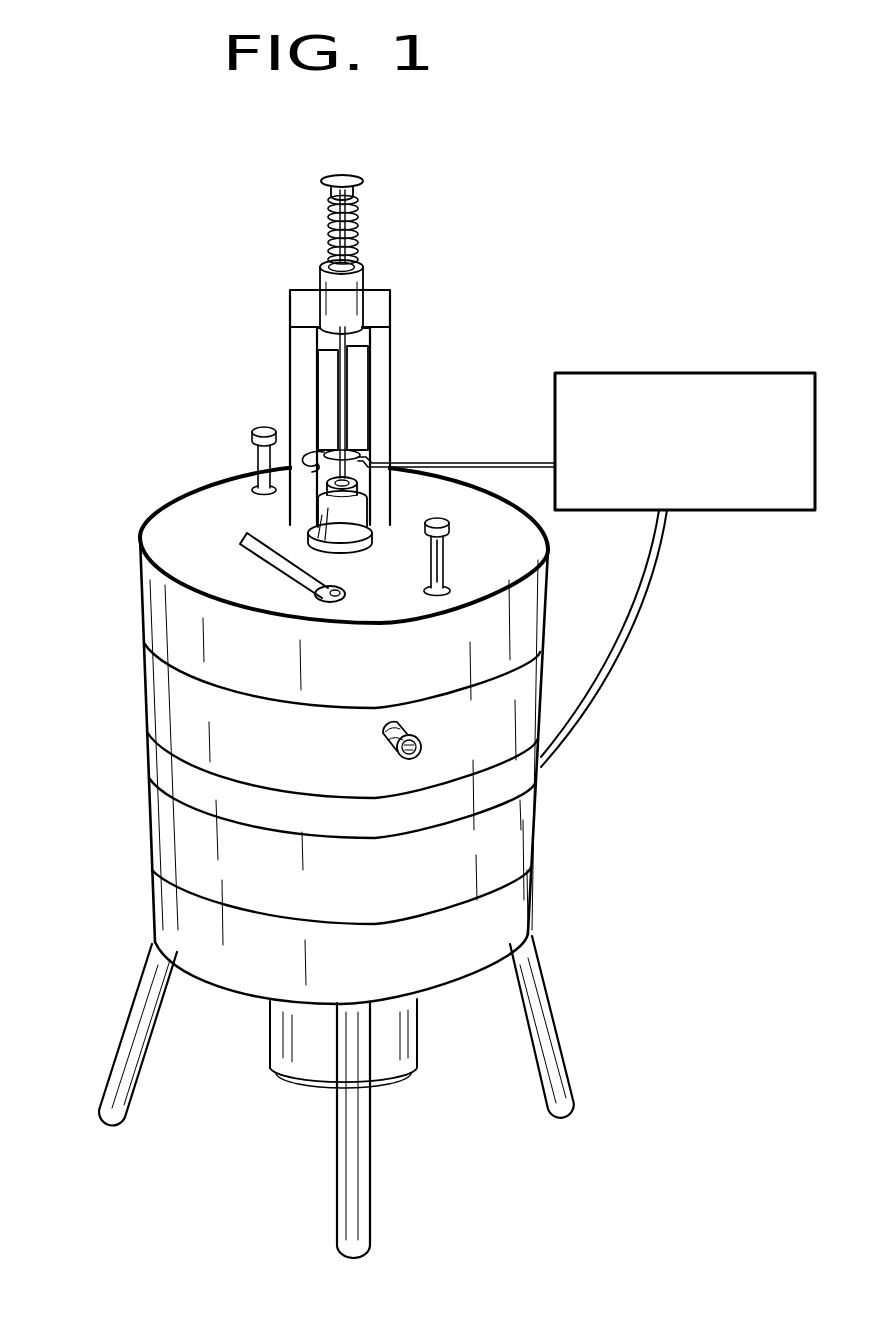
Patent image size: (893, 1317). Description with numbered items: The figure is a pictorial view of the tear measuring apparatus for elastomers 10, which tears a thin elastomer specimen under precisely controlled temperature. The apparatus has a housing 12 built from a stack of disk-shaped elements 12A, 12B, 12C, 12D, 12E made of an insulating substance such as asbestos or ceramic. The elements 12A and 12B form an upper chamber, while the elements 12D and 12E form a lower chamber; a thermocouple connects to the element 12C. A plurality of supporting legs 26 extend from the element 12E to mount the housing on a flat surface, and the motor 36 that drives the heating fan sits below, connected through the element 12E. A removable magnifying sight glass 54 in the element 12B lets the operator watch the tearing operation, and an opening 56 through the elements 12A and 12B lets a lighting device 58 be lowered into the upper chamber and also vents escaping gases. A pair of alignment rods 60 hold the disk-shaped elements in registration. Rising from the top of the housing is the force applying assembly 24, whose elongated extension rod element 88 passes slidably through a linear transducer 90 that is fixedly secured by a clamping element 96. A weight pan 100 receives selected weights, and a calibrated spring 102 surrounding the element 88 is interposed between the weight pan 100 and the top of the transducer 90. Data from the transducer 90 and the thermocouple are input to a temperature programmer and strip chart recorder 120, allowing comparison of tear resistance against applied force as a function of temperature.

The tear measuring apparatus for elastomers 10 is at (112, 958).
The housing 12 is at (552, 832).
The disk-shaped element 12A is at (140, 613).
The disk-shaped element 12B is at (145, 700).
The disk-shaped element 12C is at (148, 766).
The disk-shaped element 12D is at (152, 846).
The disk-shaped element 12E is at (154, 914).
The force applying assembly 24 is at (418, 385).
The supporting legs 26 is at (138, 1098).
The motor 36 is at (418, 1066).
The removable magnifying sight glass 54 is at (440, 752).
The opening 56 is at (345, 595).
The lighting device 58 is at (270, 562).
The alignment rods 60 is at (252, 458).
The elongated extension rod element 88 is at (356, 478).
The linear transducer 90 is at (364, 280).
The clamping element 96 is at (364, 360).
The weight pan 100 is at (364, 180).
The calibrated spring 102 is at (360, 230).
The temperature programmer and strip chart recorder 120 is at (660, 373).